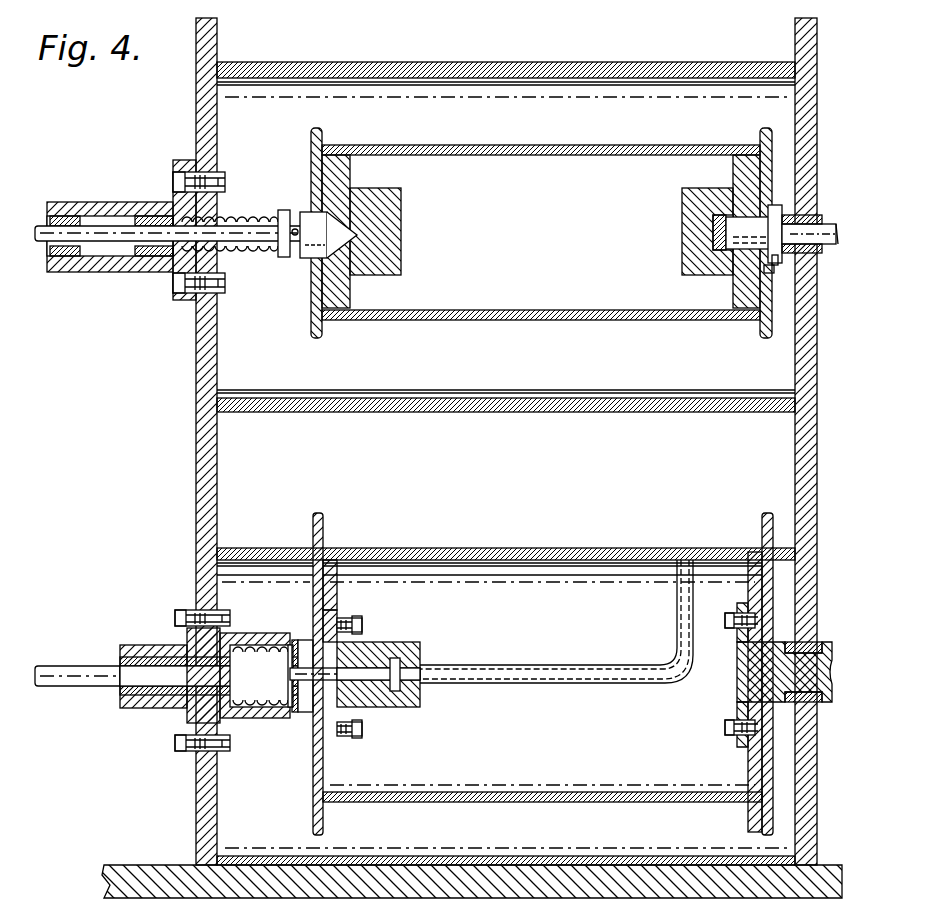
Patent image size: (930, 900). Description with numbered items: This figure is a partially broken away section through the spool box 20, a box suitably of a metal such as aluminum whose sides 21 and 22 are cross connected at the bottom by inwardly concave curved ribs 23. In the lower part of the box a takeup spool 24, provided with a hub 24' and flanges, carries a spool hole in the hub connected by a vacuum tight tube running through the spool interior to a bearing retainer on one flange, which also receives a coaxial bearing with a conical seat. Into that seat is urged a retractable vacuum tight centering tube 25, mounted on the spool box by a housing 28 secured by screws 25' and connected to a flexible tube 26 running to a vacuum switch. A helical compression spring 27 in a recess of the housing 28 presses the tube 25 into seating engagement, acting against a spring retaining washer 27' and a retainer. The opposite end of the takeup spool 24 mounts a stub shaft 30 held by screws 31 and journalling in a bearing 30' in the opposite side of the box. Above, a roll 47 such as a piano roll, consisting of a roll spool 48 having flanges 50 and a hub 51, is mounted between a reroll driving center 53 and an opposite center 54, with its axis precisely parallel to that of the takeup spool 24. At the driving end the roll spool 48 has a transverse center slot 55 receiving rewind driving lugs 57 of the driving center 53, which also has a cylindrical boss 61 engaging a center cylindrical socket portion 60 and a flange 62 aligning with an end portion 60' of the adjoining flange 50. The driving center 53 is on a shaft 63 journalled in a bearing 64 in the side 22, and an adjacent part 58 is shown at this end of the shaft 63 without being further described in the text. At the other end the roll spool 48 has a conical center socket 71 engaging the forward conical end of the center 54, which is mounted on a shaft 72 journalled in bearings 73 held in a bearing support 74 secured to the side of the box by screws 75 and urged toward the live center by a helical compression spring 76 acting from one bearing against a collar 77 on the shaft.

The spool box 20 is at (208, 443).
The side 21 is at (196, 350).
The side 22 is at (817, 350).
The ribs 23 is at (618, 62).
The takeup spool 24 is at (542, 671).
The hub 24' is at (333, 544).
The centering tube 25 is at (210, 683).
The screws 25' is at (177, 691).
The flexible tube 26 is at (70, 668).
The helical compression spring 27 is at (255, 657).
The spring retaining washer 27' is at (262, 695).
The housing 28 is at (142, 646).
The stub shaft 30 is at (794, 690).
The bearing 30' is at (789, 662).
The screws 31 is at (728, 735).
The roll 47 is at (510, 322).
The roll spool 48 is at (402, 275).
The flanges 50 is at (318, 126).
The hub 51 is at (555, 145).
The reroll driving center 53 is at (748, 205).
The center 54 is at (312, 215).
The transverse center slot 55 is at (740, 260).
The rewind driving lugs 57 is at (718, 232).
The stud 58 is at (812, 215).
The center cylindrical socket portion 60 is at (755, 284).
The end portion 60' is at (817, 192).
The cylindrical boss 61 is at (764, 268).
The flange 62 is at (795, 260).
The shaft 63 is at (837, 244).
The bearing 64 is at (818, 253).
The conical center socket 71 is at (360, 195).
The shaft 72 is at (112, 238).
The bearings 73 is at (100, 208).
The bearing support 74 is at (170, 282).
The screws 75 is at (178, 172).
The helical compression spring 76 is at (230, 220).
The collar 77 is at (283, 258).